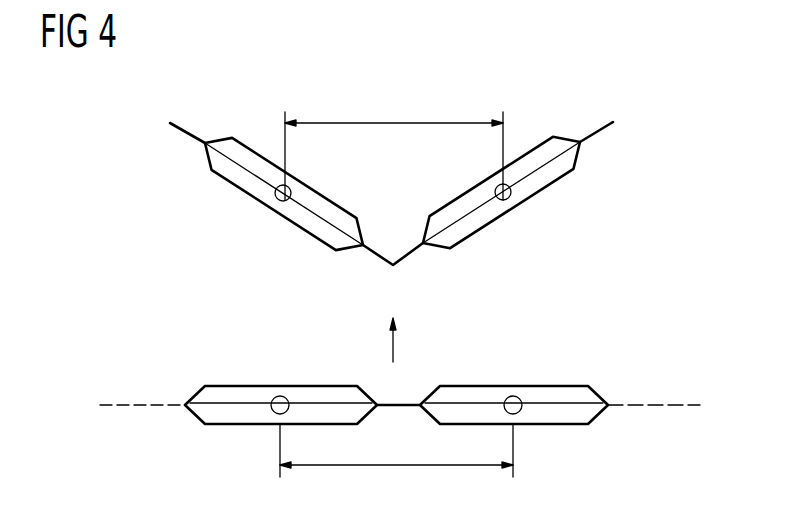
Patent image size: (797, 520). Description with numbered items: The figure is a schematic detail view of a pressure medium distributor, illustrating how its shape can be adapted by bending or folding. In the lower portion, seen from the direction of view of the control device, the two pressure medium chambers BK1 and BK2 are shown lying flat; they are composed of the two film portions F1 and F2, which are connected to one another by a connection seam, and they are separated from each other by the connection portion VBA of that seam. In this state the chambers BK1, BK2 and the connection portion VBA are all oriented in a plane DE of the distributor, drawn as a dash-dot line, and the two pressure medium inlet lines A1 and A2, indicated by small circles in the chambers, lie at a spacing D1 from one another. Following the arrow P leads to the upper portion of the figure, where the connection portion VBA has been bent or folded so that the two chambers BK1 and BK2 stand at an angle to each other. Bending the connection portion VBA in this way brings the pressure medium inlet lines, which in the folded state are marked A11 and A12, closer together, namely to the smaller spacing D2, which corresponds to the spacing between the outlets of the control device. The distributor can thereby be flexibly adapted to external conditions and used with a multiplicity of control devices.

The pressure medium chamber BK1 is at (233, 169).
The pressure medium chamber BK2 is at (557, 166).
The first pivot axis of first blade A11 is at (277, 190).
The first pivot axis of second blade A12 is at (503, 200).
The pressure medium inlet line A1 is at (273, 411).
The pressure medium inlet line A2 is at (517, 397).
The connection portion VBA is at (412, 256).
The spacing D1 is at (396, 451).
The spacing D2 is at (394, 145).
The arrow P is at (395, 350).
The plane DE is at (657, 403).
The film portion F1 is at (193, 397).
The film portion F2 is at (195, 413).